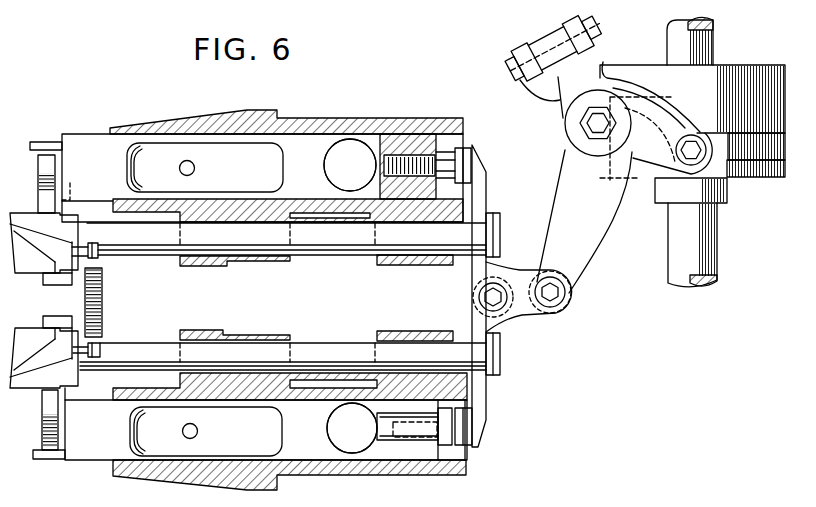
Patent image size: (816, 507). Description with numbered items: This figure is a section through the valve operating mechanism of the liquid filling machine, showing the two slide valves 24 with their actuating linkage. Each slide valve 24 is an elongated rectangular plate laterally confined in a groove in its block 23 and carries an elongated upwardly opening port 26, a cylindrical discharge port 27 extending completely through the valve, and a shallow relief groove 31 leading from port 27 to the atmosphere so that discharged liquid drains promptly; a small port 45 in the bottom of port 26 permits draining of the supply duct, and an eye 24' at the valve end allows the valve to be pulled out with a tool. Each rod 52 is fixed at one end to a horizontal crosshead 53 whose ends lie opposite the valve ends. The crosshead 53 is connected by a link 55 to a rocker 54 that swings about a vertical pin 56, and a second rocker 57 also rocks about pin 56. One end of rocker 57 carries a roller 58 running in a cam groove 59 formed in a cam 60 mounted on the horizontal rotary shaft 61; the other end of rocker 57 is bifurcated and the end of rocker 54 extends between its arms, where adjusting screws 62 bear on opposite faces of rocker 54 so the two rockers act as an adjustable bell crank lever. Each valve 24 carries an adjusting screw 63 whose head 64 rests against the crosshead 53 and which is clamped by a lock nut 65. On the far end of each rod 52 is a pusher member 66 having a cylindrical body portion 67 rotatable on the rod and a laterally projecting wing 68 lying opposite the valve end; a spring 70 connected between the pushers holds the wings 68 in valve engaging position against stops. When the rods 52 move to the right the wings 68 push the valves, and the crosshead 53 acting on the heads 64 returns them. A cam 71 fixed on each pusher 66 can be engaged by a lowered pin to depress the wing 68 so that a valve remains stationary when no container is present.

The block 23 is at (213, 120).
The slide valve 24 is at (264, 295).
The eye 24' is at (53, 303).
The elongated port 26 is at (140, 152).
The cylindrical port 27 is at (326, 156).
The groove 31 is at (380, 161).
The small port 45 is at (195, 169).
The rod 52 is at (338, 258).
The crosshead 53 is at (478, 396).
The rocker 54 is at (590, 248).
The link 55 is at (530, 307).
The pin 56 is at (592, 128).
The rocker 57 is at (647, 120).
The roller 58 is at (716, 126).
The cam groove 59 is at (730, 180).
The cam 60 is at (733, 77).
The rotary shaft 61 is at (708, 252).
The adjusting screws 62 is at (598, 29).
The adjusting screw 63 is at (404, 160).
The head 64 is at (468, 154).
The lock nut 65 is at (440, 150).
The pusher member 66 is at (17, 212).
The cylindrical body portion 67 is at (28, 262).
The wing 68 is at (56, 189).
The spring 70 is at (105, 308).
The cam 71 is at (38, 352).